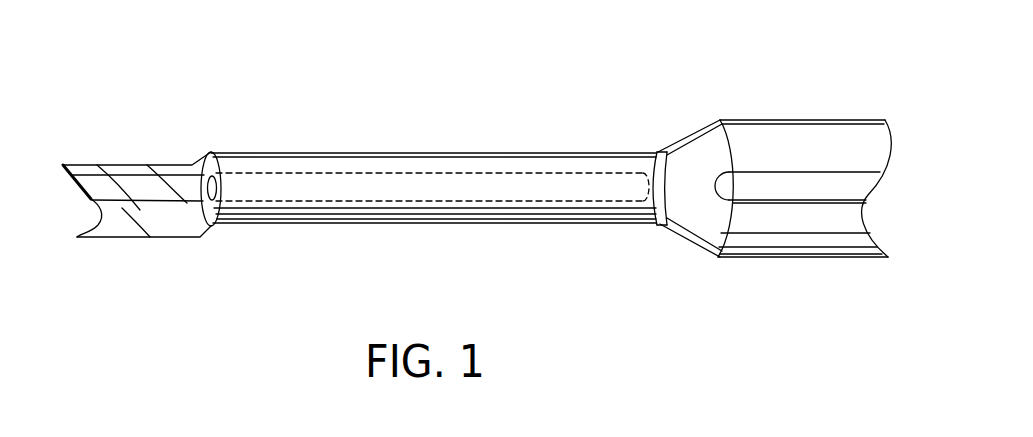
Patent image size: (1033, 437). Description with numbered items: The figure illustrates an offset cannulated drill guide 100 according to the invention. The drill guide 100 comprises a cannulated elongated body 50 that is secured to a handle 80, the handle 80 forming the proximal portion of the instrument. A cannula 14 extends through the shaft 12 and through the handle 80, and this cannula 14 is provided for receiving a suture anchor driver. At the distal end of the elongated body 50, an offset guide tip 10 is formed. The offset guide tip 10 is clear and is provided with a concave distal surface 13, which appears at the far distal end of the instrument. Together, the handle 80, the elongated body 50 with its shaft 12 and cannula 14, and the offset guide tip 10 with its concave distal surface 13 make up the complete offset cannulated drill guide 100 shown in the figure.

The offset cannulated drill guide 100 is at (778, 98).
The offset guide tip 10 is at (173, 265).
The shaft 12 is at (132, 170).
The concave distal surface 13 is at (90, 210).
The cannula 14 is at (267, 167).
The cannulated elongated body 50 is at (450, 234).
The handle 80 is at (767, 240).